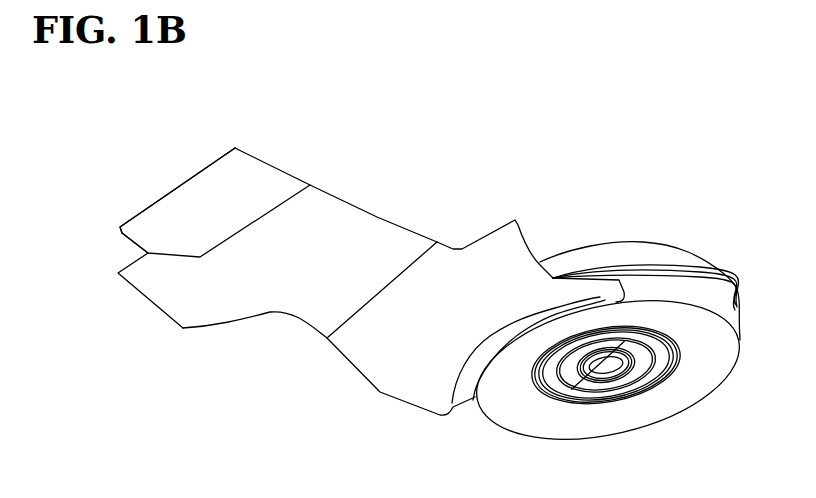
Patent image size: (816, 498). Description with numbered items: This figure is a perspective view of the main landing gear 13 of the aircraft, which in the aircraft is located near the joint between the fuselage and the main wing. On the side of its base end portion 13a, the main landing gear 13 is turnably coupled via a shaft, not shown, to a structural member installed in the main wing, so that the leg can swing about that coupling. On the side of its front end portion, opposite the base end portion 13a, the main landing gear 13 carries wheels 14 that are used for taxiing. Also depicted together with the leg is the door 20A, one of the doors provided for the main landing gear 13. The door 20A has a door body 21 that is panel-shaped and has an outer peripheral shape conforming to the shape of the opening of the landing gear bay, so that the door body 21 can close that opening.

The main landing gear 13 is at (428, 216).
The base end portion 13a is at (153, 275).
The wheels 14 is at (673, 243).
The door 20A is at (273, 177).
The door body 21 is at (188, 197).